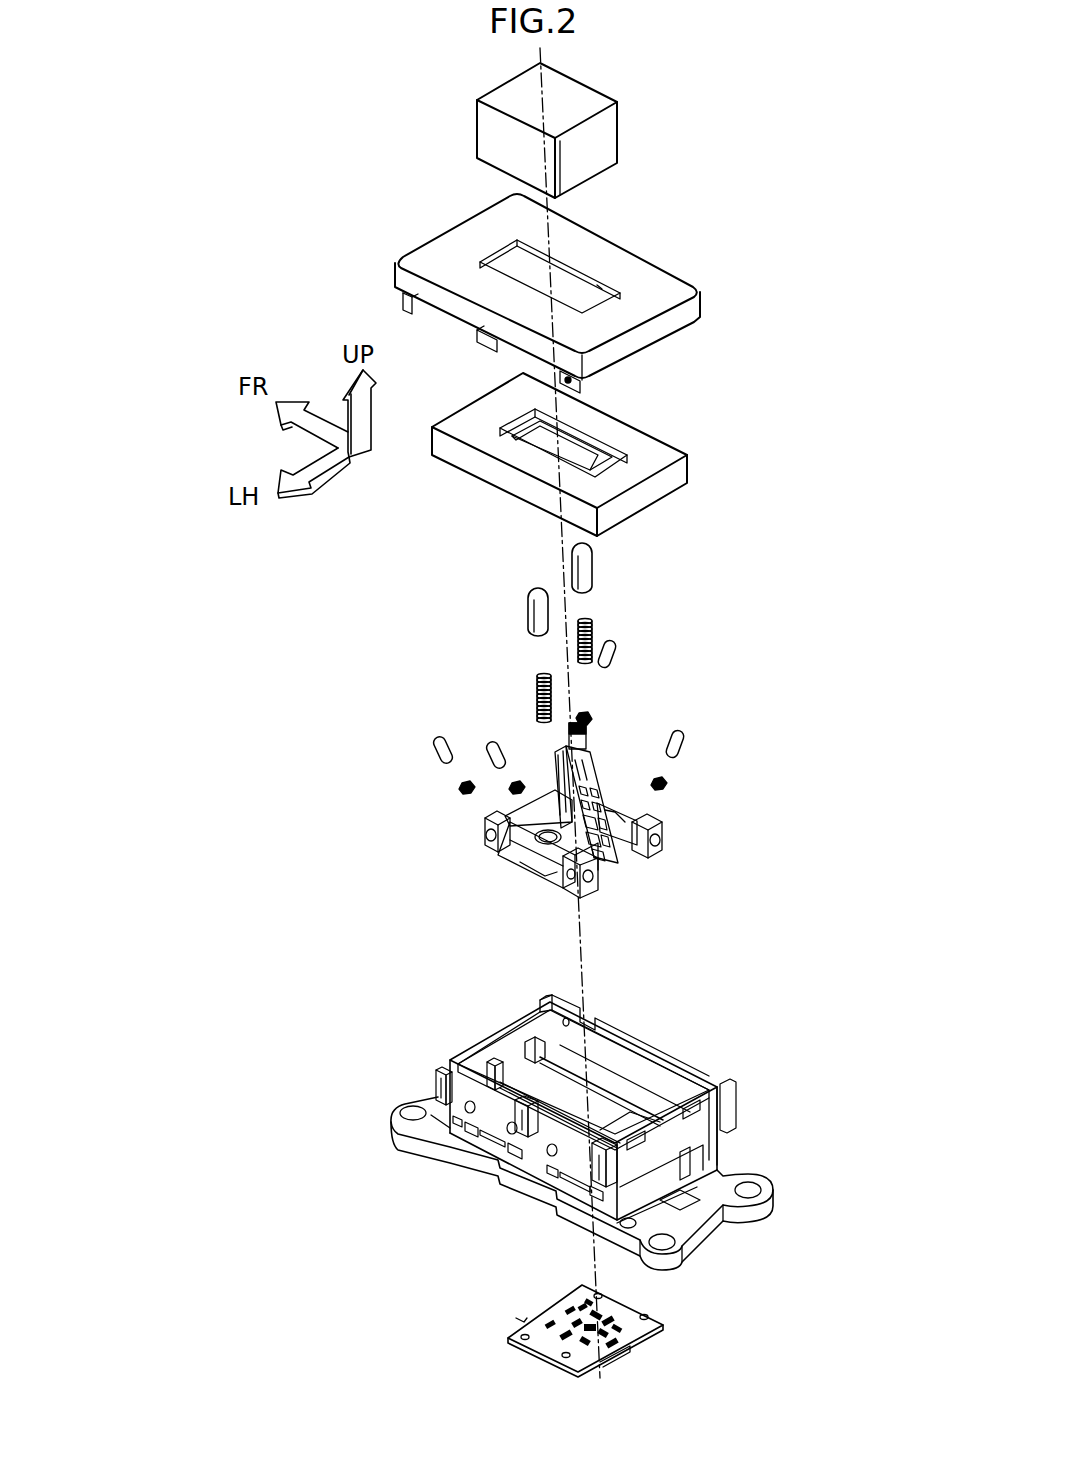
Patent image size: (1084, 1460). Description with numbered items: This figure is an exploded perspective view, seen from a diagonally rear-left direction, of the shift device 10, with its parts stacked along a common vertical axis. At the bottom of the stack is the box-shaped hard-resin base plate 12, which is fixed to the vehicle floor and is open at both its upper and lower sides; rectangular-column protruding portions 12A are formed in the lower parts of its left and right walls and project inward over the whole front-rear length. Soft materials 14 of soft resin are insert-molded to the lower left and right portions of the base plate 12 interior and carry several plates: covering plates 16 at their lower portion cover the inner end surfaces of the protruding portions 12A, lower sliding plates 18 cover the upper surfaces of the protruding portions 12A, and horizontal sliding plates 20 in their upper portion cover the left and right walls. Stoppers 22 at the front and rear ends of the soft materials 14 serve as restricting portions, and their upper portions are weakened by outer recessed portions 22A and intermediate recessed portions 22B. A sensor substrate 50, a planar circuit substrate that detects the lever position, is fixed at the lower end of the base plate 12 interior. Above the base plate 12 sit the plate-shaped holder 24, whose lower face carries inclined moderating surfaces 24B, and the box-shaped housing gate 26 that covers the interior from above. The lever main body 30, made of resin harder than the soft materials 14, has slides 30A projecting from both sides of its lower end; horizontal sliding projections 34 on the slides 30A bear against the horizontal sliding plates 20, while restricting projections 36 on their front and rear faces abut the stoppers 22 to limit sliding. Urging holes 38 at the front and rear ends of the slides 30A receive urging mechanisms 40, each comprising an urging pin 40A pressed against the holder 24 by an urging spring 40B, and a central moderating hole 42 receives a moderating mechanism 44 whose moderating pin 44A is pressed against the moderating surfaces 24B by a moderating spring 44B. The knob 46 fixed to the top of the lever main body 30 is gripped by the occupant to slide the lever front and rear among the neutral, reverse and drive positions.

The shift device 10 is at (272, 225).
The base plate 12 is at (487, 1035).
The protruding portions 12A is at (640, 1110).
The soft materials 14 is at (603, 1063).
The covering plates 16 is at (705, 1080).
The lower sliding plates 18 is at (610, 1090).
The horizontal sliding plates 20 is at (630, 1105).
The stoppers 22 is at (523, 1040).
The outer recessed portions 22A is at (550, 1000).
The intermediate recessed portions 22B is at (535, 1036).
The holder 24 is at (470, 398).
The moderating surfaces 24B is at (595, 463).
The housing gate 26 is at (455, 218).
The lever main body 30 is at (595, 752).
The slides 30A is at (530, 855).
The horizontal sliding projections 34 is at (483, 838).
The restricting projections 36 is at (598, 885).
The urging holes 38 is at (485, 822).
The urging mechanisms 40 is at (620, 678).
The urging pins 40A is at (618, 652).
The urging springs 40B is at (570, 728).
The moderating holes 42 is at (500, 845).
The moderating mechanisms 44 is at (603, 592).
The moderating pins 44A is at (595, 558).
The moderating springs 44B is at (594, 630).
The knob 46 is at (472, 112).
The sensor substrate 50 is at (545, 1305).